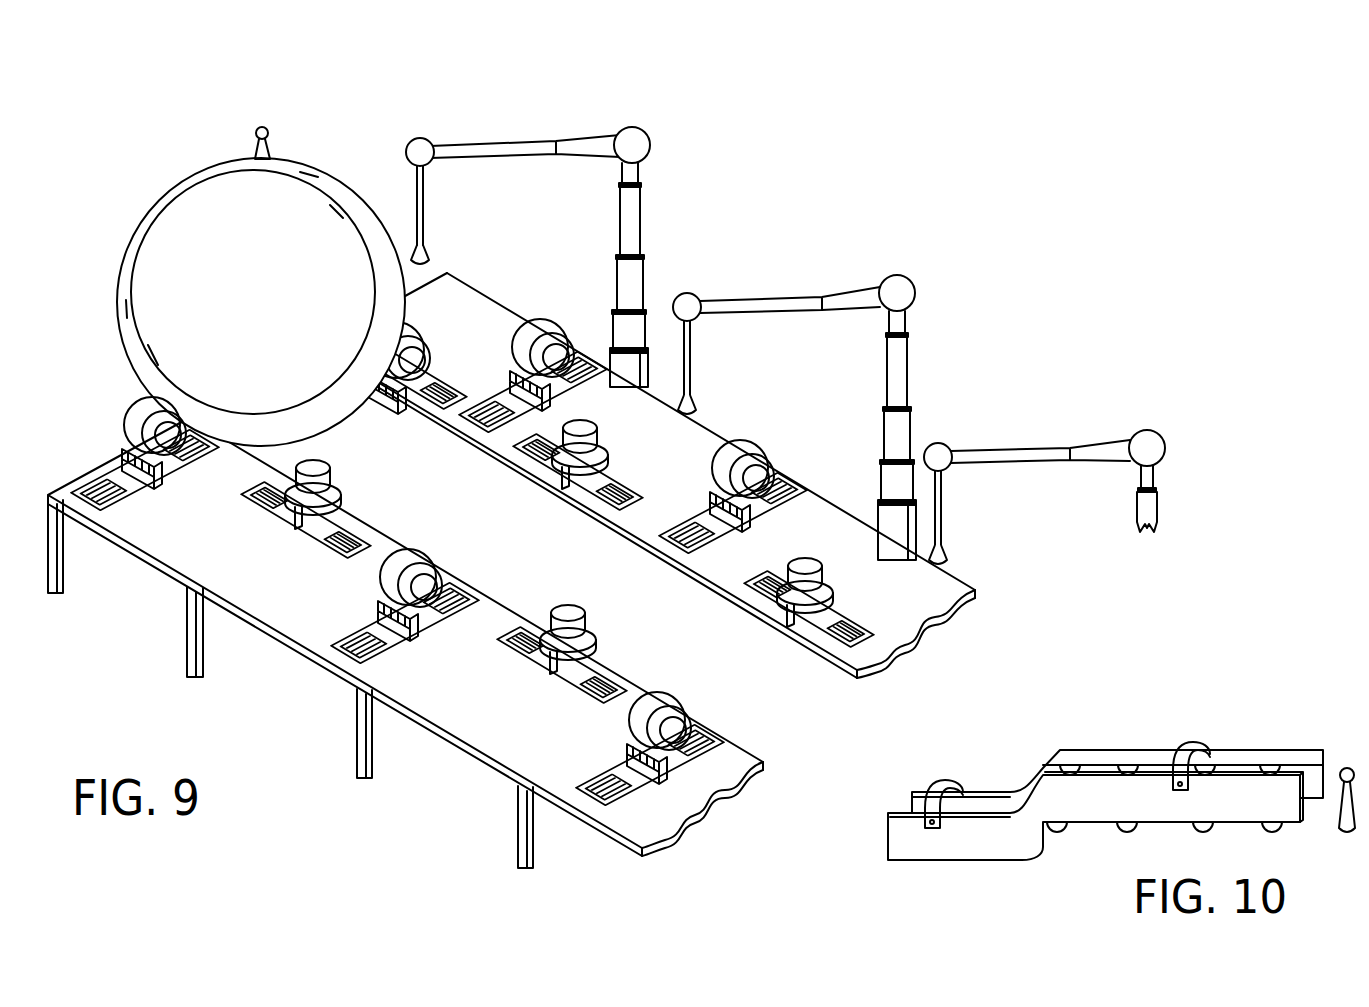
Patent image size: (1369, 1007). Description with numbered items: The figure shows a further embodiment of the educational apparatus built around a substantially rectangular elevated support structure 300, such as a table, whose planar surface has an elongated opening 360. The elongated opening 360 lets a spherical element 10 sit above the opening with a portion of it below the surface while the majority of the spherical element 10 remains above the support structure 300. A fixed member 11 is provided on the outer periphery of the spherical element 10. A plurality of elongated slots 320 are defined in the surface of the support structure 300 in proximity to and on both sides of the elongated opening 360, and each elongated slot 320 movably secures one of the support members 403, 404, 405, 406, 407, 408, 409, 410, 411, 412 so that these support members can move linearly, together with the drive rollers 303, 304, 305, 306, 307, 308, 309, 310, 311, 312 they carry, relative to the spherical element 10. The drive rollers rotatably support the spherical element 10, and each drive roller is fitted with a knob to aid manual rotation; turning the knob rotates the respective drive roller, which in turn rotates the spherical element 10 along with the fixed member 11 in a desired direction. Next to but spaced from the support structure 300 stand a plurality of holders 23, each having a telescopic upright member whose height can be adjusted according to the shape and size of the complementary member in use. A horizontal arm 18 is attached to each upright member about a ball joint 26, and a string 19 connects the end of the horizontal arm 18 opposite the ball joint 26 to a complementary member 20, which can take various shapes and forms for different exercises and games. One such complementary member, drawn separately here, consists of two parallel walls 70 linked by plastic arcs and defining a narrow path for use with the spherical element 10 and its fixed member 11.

In FIG. 9, the spherical element 10 is at (158, 210).
In FIG. 9, the fixed member 11 is at (257, 152).
In FIG. 9, the horizontal arm 18 is at (484, 150).
In FIG. 9, the string 19 is at (415, 195).
In FIG. 9, the complementary member 20 is at (425, 255).
In FIG. 9, the holder 23 is at (672, 172).
In FIG. 9, the ball joint 26 is at (636, 144).
In FIG. 10, the two parallel walls 70 is at (1242, 760).
In FIG. 9, the support structure 300 is at (265, 628).
In FIG. 9, the drive roller 303 is at (138, 412).
In FIG. 9, the drive roller 304 is at (428, 378).
In FIG. 9, the drive roller 305 is at (273, 486).
In FIG. 9, the drive roller 306 is at (555, 330).
In FIG. 9, the drive roller 307 is at (382, 584).
In FIG. 9, the drive roller 308 is at (600, 450).
In FIG. 9, the drive roller 309 is at (553, 653).
In FIG. 9, the drive roller 310 is at (752, 468).
In FIG. 9, the drive roller 311 is at (643, 727).
In FIG. 9, the drive roller 312 is at (820, 572).
In FIG. 9, the elongated slot 320 is at (657, 834).
In FIG. 9, the elongated opening 360 is at (731, 661).
In FIG. 9, the support member 403 is at (117, 485).
In FIG. 9, the support member 404 is at (452, 405).
In FIG. 9, the support member 405 is at (287, 517).
In FIG. 9, the support member 406 is at (567, 395).
In FIG. 9, the support member 407 is at (387, 647).
In FIG. 9, the support member 408 is at (628, 480).
In FIG. 9, the support member 409 is at (580, 685).
In FIG. 9, the support member 410 is at (785, 505).
In FIG. 9, the support member 411 is at (621, 803).
In FIG. 9, the support member 412 is at (838, 620).